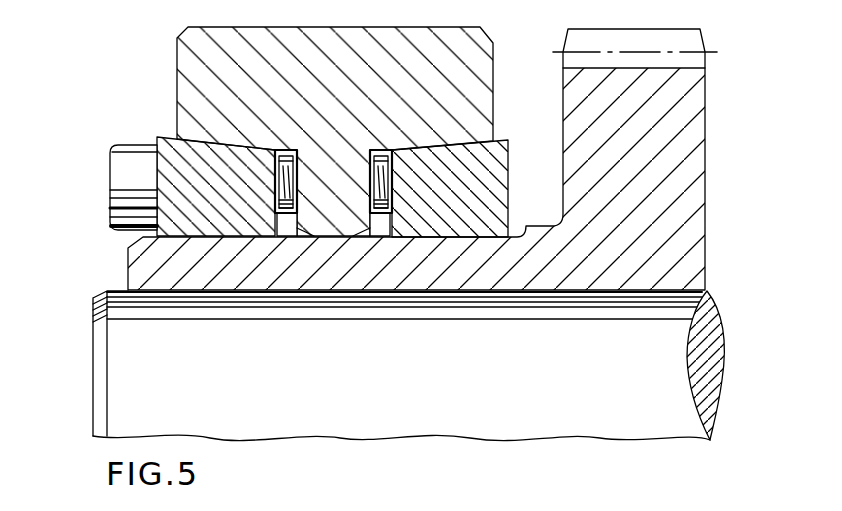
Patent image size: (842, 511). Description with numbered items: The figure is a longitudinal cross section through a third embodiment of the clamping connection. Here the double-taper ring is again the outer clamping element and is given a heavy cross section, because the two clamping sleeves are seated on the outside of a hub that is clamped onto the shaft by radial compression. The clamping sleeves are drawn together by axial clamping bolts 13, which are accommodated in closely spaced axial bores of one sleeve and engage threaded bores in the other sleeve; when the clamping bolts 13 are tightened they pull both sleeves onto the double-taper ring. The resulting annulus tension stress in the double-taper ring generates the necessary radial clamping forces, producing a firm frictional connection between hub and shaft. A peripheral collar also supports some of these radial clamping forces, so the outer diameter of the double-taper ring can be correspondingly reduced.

The clamping bolts 13 is at (130, 169).